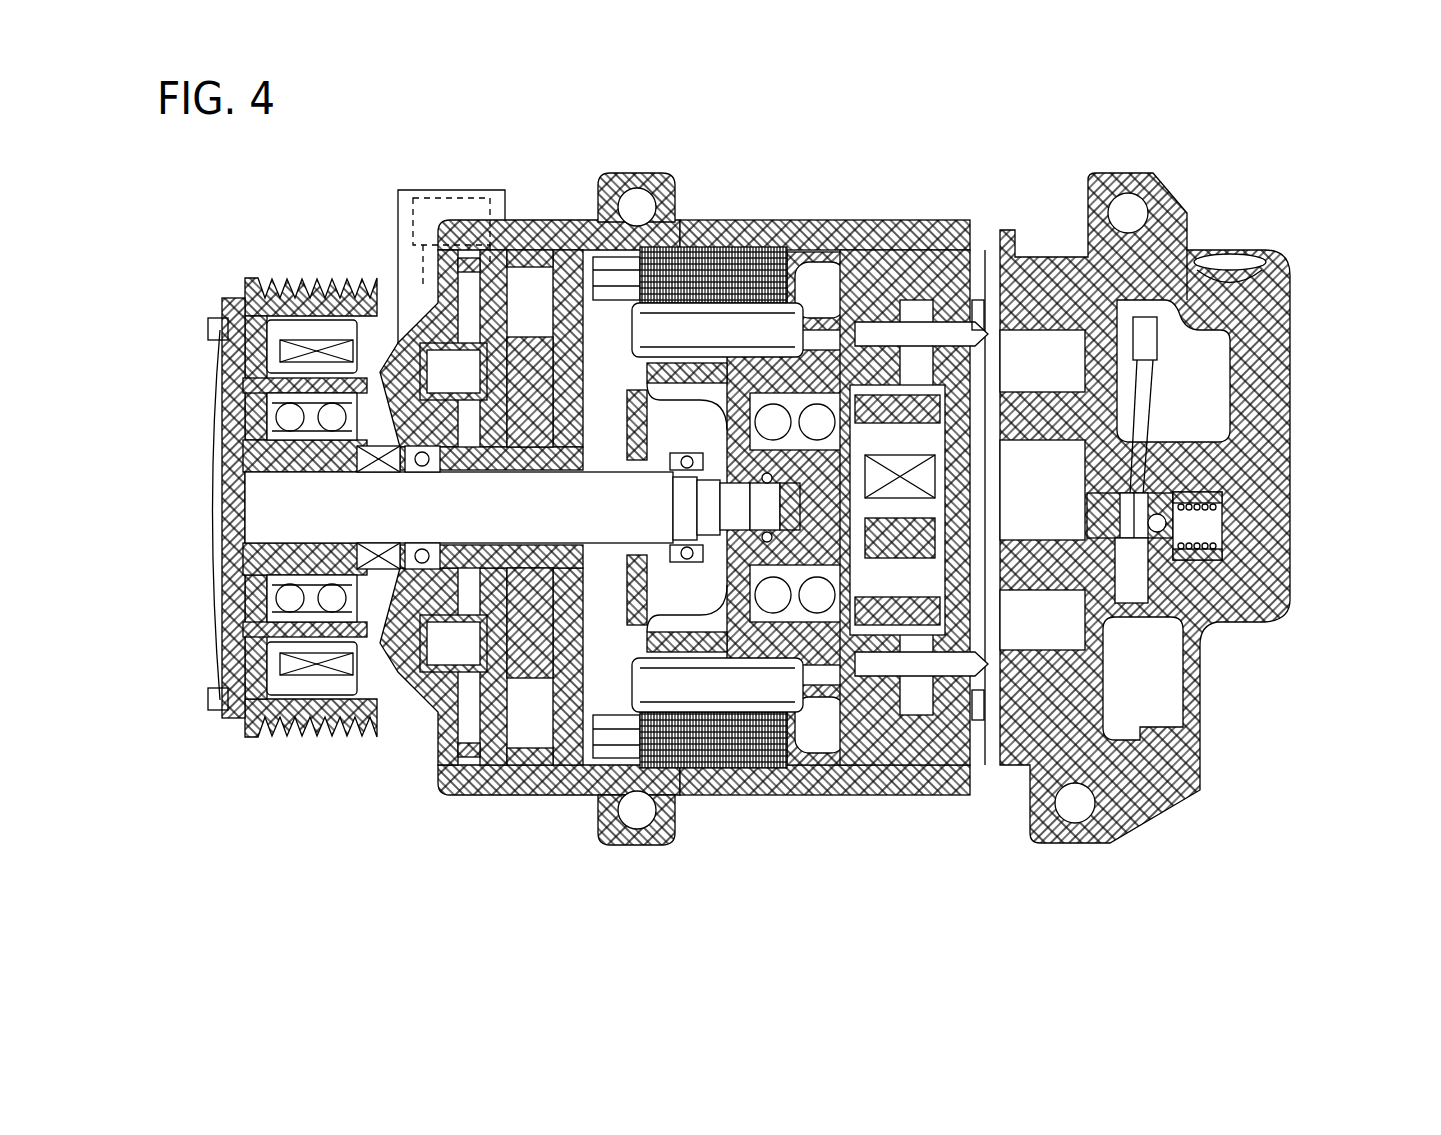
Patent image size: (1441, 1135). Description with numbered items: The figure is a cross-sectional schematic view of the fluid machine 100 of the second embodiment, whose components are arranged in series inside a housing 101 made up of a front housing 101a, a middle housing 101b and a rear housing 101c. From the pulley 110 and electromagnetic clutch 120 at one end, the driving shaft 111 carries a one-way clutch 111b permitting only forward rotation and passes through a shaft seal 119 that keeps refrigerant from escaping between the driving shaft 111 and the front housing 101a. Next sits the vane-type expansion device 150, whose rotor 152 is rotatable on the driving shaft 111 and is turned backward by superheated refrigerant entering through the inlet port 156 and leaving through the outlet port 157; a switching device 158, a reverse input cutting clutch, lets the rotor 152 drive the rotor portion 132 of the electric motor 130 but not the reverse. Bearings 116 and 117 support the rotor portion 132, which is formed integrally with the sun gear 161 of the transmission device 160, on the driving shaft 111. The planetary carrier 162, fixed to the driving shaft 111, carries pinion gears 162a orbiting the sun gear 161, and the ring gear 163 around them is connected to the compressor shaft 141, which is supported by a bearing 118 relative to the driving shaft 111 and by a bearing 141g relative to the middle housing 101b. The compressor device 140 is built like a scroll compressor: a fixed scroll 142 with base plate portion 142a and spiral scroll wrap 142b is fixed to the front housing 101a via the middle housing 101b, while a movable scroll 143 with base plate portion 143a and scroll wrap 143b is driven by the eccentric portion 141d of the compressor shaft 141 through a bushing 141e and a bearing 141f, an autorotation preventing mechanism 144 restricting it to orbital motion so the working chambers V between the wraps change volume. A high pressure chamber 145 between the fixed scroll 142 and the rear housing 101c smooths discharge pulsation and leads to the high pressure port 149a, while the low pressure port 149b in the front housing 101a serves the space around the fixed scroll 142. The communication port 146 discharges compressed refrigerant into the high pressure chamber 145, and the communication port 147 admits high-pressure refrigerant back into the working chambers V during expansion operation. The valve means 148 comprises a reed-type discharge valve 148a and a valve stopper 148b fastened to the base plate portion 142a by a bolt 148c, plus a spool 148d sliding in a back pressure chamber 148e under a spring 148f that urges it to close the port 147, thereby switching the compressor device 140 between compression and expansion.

The fluid machine 100 is at (390, 172).
The housing 101 is at (828, 208).
The front housing 101a is at (555, 252).
The middle housing 101b is at (880, 325).
The rear housing 101c is at (1195, 255).
The pulley 110 is at (262, 285).
The driving shaft 111 is at (290, 498).
The one-way clutch 111b is at (440, 630).
The bearing 116 is at (640, 760).
The bearing 117 is at (680, 770).
The bearing 118 is at (740, 772).
The shaft seal 119 is at (295, 540).
The electromagnetic clutch 120 is at (300, 330).
The electric motor 130 is at (775, 300).
The rotor portion 132 is at (702, 785).
The compressor device 140 is at (1030, 250).
The compressor shaft 141 is at (805, 770).
The eccentric portion 141d is at (850, 770).
The bushing 141e is at (885, 770).
The bearing 141f is at (918, 770).
The bearing 141g is at (770, 780).
The fixed scroll 142 is at (1000, 262).
The base plate portion 142a is at (1105, 770).
The spiral scroll wrap 142b is at (1035, 770).
The movable scroll 143 is at (950, 290).
The base plate portion 143a is at (952, 780).
The spiral scroll wrap 143b is at (980, 770).
The autorotation preventing mechanism 144 is at (910, 320).
The high pressure chamber 145 is at (1215, 355).
The communication port 146 is at (1150, 630).
The communication port 147 is at (1130, 560).
The valve means 148 is at (1372, 580).
The discharge valve 148a is at (1040, 490).
The valve stopper 148b is at (1135, 420).
The bolt 148c is at (1160, 345).
The spool 148d is at (1215, 515).
The back pressure chamber 148e is at (1215, 535).
The spring 148f is at (1180, 548).
The high pressure port 149a is at (1260, 262).
The low pressure port 149b is at (425, 190).
The expansion device 150 is at (578, 300).
The rotor 152 is at (600, 290).
The inlet port 156 is at (505, 245).
The outlet port 157 is at (520, 800).
The switching device 158 is at (572, 778).
The transmission device 160 is at (780, 118).
The sun gear 161 is at (655, 370).
The planetary carrier 162 is at (720, 340).
The pinion gears 162a is at (688, 445).
The ring gear 163 is at (690, 360).
The working chambers V is at (1110, 640).